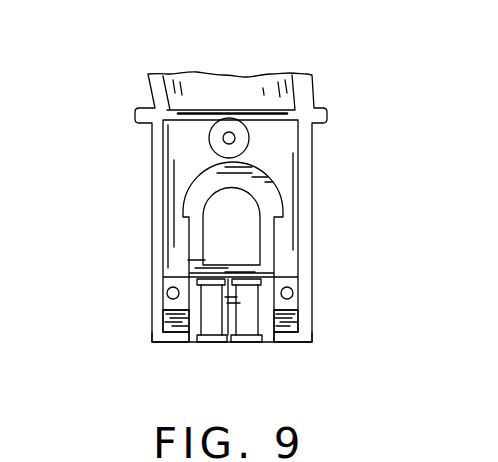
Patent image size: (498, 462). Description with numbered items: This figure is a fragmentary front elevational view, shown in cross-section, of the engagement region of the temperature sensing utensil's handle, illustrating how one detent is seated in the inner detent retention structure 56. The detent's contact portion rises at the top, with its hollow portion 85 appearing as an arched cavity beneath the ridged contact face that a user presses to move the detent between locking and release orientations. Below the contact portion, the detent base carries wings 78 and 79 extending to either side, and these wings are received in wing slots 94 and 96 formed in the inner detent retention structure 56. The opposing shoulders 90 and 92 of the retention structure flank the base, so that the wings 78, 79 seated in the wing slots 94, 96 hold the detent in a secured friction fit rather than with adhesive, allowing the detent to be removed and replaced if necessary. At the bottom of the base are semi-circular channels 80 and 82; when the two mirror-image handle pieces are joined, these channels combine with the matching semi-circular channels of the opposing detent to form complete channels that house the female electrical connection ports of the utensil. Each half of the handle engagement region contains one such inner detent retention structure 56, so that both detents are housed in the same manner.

The inner detent retention structure 56 is at (308, 274).
The hollow portion 85 is at (215, 229).
The shoulder 90 is at (165, 304).
The shoulder 92 is at (295, 302).
The wing 79 is at (167, 323).
The wing 78 is at (296, 319).
The wing slot 94 is at (178, 343).
The wing slot 96 is at (294, 343).
The semi-circular channel 82 is at (211, 328).
The semi-circular channel 80 is at (245, 328).